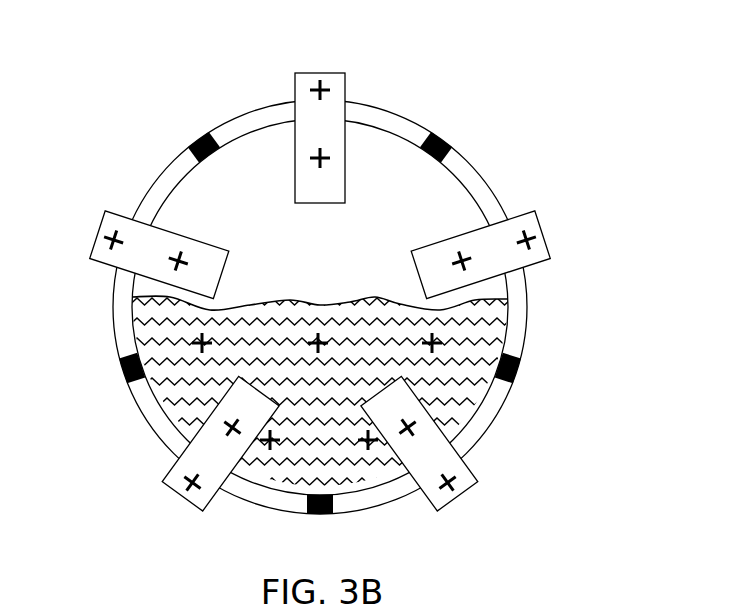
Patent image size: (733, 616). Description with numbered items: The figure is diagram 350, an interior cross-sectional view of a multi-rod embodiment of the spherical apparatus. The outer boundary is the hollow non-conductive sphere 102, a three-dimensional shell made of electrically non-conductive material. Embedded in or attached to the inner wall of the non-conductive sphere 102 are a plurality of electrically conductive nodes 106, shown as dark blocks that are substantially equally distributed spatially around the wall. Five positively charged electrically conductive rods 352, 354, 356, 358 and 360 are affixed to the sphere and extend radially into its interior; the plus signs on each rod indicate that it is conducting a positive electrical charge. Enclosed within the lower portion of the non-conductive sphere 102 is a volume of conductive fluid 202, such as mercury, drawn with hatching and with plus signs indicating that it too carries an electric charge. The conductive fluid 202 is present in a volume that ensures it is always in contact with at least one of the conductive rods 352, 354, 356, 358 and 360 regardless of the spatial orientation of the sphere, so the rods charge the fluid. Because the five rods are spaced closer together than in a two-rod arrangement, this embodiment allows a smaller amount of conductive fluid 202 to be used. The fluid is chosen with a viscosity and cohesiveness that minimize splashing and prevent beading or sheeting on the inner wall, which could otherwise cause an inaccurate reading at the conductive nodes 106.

The diagram 350 is at (363, 295).
The non-conductive sphere 102 is at (388, 107).
The electrically conductive nodes 106 is at (200, 137).
The conductive fluid 202 is at (458, 398).
The conductive rod 352 is at (320, 73).
The conductive rod 354 is at (540, 225).
The conductive rod 356 is at (467, 494).
The conductive rod 358 is at (180, 494).
The conductive rod 360 is at (103, 223).